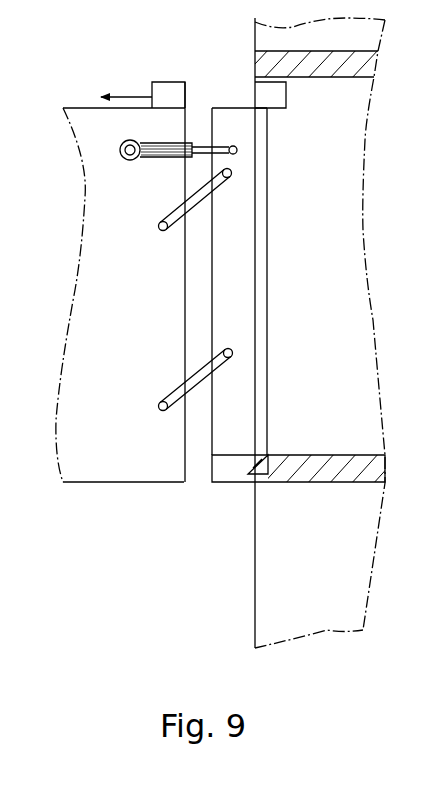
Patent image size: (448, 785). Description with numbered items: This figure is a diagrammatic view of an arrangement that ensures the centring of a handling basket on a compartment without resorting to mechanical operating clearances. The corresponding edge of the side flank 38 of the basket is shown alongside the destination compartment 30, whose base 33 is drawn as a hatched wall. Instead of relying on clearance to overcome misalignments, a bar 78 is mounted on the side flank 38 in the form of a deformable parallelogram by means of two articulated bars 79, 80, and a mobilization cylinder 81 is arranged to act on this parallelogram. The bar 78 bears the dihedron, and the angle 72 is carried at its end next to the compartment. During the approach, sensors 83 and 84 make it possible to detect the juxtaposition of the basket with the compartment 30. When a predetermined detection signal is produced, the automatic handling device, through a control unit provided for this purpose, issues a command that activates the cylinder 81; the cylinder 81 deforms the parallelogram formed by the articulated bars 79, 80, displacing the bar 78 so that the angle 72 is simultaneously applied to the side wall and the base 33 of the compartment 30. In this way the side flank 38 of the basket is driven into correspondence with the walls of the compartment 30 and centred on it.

The destination compartment 30 is at (354, 323).
The base 33 is at (363, 458).
The side flank 38 is at (90, 497).
The angle 72 is at (227, 477).
The bar 78 is at (215, 433).
The articulated bar 79 is at (177, 385).
The articulated bar 80 is at (197, 210).
The mobilization cylinder 81 is at (140, 160).
The sensor 83 is at (172, 82).
The sensor 84 is at (278, 90).